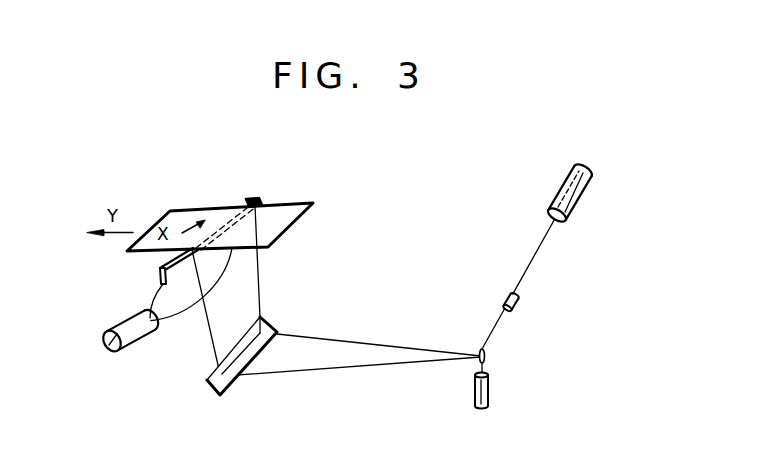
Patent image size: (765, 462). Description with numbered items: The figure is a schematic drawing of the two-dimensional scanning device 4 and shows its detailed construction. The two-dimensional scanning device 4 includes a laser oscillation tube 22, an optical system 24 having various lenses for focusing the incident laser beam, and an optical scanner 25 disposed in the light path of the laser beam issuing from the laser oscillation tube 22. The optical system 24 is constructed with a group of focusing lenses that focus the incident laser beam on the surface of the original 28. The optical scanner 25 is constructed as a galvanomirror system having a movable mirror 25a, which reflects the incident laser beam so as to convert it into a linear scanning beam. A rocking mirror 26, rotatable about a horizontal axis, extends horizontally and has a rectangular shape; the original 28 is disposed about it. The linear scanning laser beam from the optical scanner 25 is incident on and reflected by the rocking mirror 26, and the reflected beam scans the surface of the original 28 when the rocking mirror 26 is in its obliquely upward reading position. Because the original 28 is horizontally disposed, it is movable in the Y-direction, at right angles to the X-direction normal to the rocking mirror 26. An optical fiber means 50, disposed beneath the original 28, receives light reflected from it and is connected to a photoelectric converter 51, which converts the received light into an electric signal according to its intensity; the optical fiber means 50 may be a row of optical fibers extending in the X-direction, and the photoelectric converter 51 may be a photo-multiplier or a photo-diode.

The two-dimensional scanning device 4 is at (448, 218).
The laser oscillation tube 22 is at (581, 194).
The optical system 24 is at (519, 302).
The optical scanner 25 is at (488, 393).
The movable mirror 25a is at (485, 356).
The rocking mirror 26 is at (206, 382).
The original 28 is at (288, 210).
The optical fiber means 50 is at (160, 275).
The photoelectric converter 51 is at (132, 347).